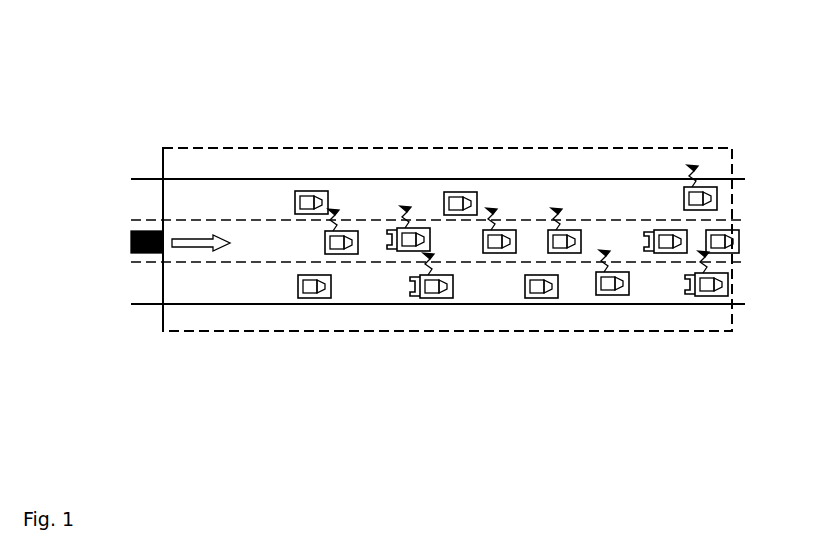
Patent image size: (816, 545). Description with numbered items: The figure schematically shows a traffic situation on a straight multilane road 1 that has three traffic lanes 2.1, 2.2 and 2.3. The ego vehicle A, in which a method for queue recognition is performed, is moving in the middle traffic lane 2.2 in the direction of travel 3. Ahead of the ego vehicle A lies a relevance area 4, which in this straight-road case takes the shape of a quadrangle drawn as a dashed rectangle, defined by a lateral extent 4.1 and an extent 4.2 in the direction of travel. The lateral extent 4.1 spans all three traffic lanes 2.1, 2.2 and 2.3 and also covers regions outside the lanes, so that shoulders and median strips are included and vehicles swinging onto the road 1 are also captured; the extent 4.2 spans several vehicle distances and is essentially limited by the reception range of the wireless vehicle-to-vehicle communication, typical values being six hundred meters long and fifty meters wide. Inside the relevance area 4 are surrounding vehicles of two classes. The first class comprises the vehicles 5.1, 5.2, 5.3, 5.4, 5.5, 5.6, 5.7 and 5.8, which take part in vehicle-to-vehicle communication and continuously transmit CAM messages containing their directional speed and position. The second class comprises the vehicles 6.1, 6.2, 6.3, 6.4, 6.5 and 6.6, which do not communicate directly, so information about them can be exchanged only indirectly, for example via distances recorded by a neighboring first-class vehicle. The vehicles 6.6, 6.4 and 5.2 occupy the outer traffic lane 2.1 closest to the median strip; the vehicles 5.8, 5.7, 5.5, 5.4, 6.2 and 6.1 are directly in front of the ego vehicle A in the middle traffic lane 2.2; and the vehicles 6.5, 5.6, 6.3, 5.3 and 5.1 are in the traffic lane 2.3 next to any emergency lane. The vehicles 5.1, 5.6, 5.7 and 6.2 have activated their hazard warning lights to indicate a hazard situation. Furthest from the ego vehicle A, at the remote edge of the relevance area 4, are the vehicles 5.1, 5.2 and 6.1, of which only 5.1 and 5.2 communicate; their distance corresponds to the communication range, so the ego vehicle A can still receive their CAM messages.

The multilane road 1 is at (148, 177).
The traffic lane 2.1 is at (137, 200).
The traffic lane 2.2 is at (118, 244).
The traffic lane 2.3 is at (137, 282).
The ego vehicle A is at (135, 230).
The direction of travel 3 is at (212, 247).
The relevance area 4 is at (163, 331).
The lateral extent 4.1 is at (163, 168).
The extent in the direction of travel 4.2 is at (193, 148).
The surrounding vehicle 5.1 is at (707, 287).
The surrounding vehicle 5.2 is at (707, 187).
The surrounding vehicle 5.3 is at (606, 288).
The surrounding vehicle 5.4 is at (552, 232).
The surrounding vehicle 5.5 is at (497, 230).
The surrounding vehicle 5.6 is at (430, 287).
The surrounding vehicle 5.7 is at (417, 223).
The surrounding vehicle 5.8 is at (350, 247).
The vehicle not taking part in vehicle-to-vehicle communication 6.1 is at (720, 233).
The vehicle not taking part in vehicle-to-vehicle communication 6.2 is at (665, 232).
The vehicle not taking part in vehicle-to-vehicle communication 6.3 is at (542, 287).
The vehicle not taking part in vehicle-to-vehicle communication 6.4 is at (458, 197).
The vehicle not taking part in vehicle-to-vehicle communication 6.5 is at (313, 290).
The vehicle not taking part in vehicle-to-vehicle communication 6.6 is at (302, 192).